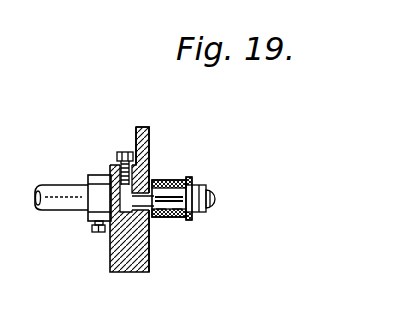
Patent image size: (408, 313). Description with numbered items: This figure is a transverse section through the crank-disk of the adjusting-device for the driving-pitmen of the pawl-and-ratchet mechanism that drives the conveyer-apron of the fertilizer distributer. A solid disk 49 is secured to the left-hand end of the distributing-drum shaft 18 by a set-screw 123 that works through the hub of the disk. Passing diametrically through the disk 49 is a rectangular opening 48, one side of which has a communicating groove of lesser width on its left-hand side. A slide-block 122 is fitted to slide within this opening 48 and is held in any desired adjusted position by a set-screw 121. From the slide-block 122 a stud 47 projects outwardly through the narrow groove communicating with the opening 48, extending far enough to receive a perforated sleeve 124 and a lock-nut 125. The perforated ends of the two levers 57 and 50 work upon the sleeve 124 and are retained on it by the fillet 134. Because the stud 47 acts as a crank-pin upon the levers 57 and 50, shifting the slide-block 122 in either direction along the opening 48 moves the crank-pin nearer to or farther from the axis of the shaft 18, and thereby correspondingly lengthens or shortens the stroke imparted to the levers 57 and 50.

The distributing-drum shaft 18 is at (52, 192).
The diametrical rectangular opening 48 is at (110, 172).
The set-screw 121 is at (122, 151).
The solid disk 49 is at (148, 138).
The stud 47 is at (143, 190).
The perforated sleeve 124 is at (187, 190).
The lock-nut 125 is at (207, 193).
The fillet 134 is at (192, 216).
The lever 57 is at (160, 217).
The lever 50 is at (177, 217).
The set-screw 123 is at (96, 232).
The slide-block 122 is at (110, 233).